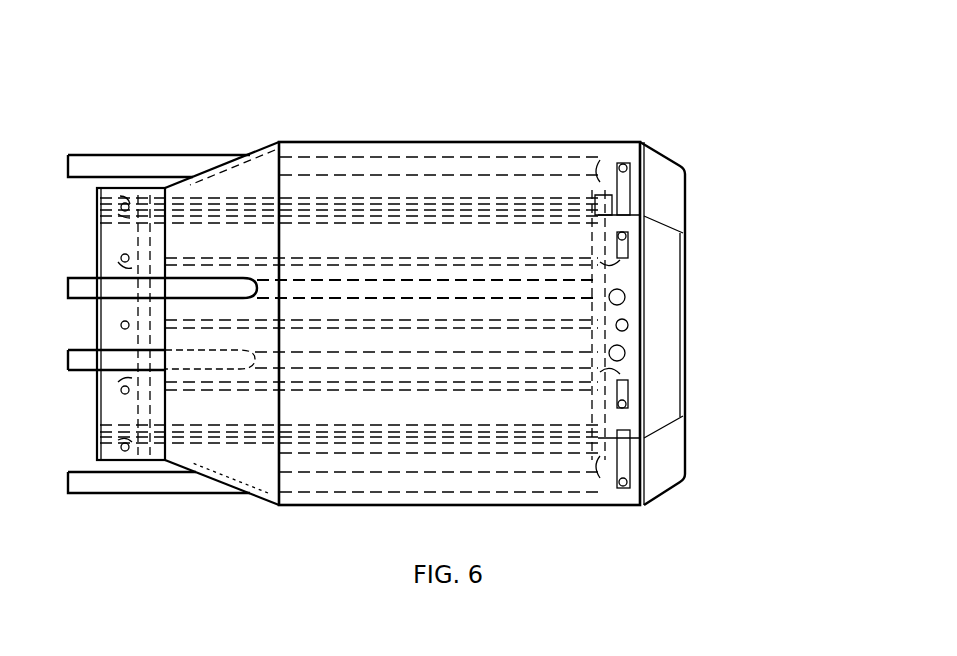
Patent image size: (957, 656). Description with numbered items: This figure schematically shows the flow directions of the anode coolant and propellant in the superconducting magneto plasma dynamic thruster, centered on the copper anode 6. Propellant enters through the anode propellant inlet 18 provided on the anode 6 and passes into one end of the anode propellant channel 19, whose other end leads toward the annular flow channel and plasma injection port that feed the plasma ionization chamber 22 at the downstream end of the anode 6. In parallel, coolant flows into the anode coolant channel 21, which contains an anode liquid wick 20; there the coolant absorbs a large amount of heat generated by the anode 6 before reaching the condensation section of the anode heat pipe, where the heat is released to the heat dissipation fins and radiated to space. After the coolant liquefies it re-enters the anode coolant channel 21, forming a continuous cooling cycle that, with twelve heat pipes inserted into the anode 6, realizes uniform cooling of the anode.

The anode 6 is at (356, 146).
The anode propellant inlet 18 is at (74, 163).
The anode propellant channel 19 is at (408, 158).
The anode liquid wick 20 is at (408, 265).
The anode coolant channel 21 is at (558, 258).
The plasma ionization chamber 22 is at (663, 270).